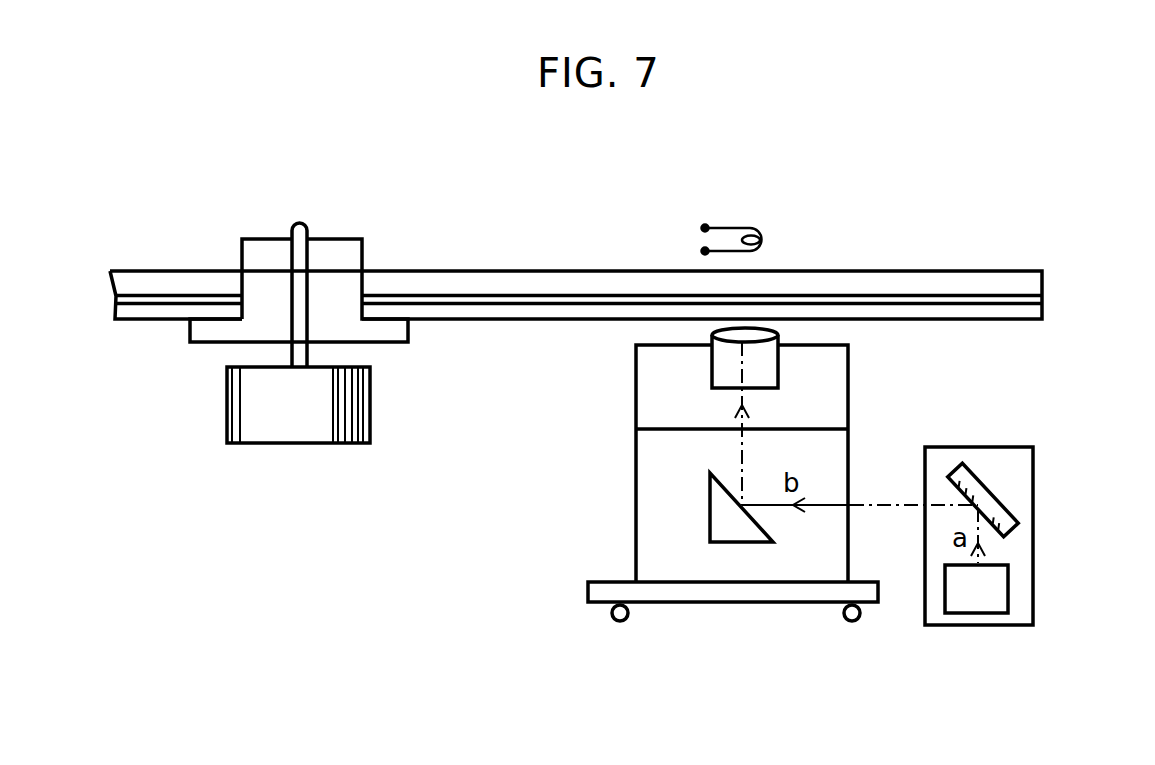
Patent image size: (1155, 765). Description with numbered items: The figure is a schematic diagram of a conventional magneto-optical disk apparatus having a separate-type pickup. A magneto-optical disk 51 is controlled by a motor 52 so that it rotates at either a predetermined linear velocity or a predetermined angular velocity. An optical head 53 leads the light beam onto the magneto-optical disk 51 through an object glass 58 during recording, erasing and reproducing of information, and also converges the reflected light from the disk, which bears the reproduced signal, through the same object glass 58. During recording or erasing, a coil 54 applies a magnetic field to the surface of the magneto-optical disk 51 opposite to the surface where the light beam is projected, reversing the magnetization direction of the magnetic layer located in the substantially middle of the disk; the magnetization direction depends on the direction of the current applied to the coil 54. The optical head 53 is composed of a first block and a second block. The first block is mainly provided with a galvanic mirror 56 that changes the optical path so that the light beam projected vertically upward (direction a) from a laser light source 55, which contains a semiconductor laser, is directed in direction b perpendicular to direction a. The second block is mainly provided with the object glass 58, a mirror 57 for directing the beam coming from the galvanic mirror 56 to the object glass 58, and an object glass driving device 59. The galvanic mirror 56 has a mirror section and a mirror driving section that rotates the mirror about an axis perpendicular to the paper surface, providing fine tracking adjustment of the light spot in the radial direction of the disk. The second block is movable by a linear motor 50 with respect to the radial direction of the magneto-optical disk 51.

The linear motor 50 is at (592, 603).
The magneto-optical disk 51 is at (892, 270).
The motor 52 is at (313, 443).
The optical head 53 is at (1033, 373).
The coil 54 is at (742, 226).
The laser light source 55 is at (975, 615).
The galvanic mirror 56 is at (960, 463).
The mirror 57 is at (743, 545).
The object glass 58 is at (717, 334).
The object glass driving device 59 is at (850, 392).